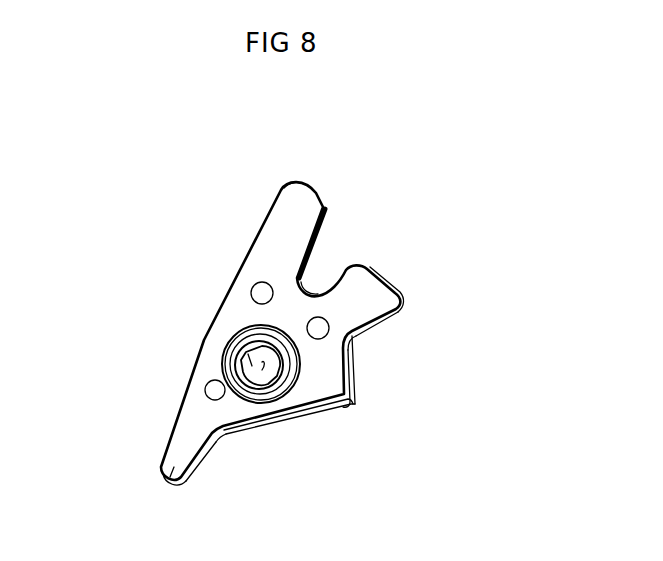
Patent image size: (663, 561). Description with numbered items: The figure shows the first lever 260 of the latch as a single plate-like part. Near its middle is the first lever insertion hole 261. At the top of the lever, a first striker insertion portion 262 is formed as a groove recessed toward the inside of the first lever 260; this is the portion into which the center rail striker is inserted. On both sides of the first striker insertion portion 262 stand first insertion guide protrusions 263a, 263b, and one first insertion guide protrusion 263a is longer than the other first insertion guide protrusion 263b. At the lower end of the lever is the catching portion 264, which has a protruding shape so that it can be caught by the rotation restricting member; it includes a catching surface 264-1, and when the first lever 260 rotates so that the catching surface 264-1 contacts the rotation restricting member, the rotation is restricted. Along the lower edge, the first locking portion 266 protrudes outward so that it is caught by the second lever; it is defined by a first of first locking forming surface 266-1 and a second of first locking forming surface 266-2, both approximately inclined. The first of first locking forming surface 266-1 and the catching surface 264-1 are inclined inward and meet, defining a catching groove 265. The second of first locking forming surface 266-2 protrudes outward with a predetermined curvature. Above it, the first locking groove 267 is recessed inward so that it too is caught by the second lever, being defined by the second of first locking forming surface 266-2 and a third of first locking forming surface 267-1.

The first lever 260 is at (160, 386).
The first lever insertion hole 261 is at (260, 360).
The first striker insertion portion 262 is at (325, 282).
The first insertion guide protrusion 263a is at (305, 194).
The first insertion guide protrusion 263b is at (362, 290).
The catching portion 264 is at (172, 470).
The catching surface 264-1 is at (205, 460).
The catching groove 265 is at (224, 433).
The first locking portion 266 is at (347, 405).
The first of first locking forming surface 266-1 is at (280, 415).
The second of first locking forming surface 266-2 is at (361, 357).
The first locking groove 267 is at (350, 330).
The third of first locking forming surface 267-1 is at (388, 315).